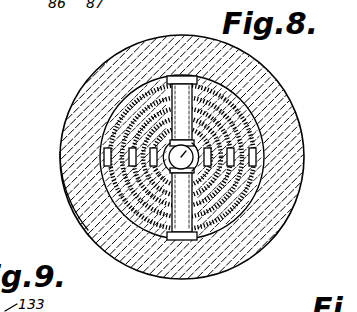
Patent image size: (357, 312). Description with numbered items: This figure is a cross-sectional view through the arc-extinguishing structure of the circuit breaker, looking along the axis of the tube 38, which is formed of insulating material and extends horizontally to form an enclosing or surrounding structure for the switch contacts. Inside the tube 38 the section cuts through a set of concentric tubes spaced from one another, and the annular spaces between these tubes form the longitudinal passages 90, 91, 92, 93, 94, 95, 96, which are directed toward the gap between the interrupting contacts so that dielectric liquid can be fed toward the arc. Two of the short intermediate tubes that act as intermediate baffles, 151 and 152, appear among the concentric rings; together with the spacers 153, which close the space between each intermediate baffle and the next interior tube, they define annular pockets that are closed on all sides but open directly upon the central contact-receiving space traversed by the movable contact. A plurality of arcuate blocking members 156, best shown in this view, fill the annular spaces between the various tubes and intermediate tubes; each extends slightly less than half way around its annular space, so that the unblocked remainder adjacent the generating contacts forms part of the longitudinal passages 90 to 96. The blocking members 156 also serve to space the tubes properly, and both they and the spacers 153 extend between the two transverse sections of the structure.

The tube 38 is at (255, 65).
The spacer 153 is at (246, 111).
The blocking member 156 is at (142, 108).
The longitudinal passage 96 is at (257, 155).
The longitudinal passage 95 is at (250, 172).
The longitudinal passage 94 is at (230, 192).
The intermediate baffle 152 is at (218, 190).
The intermediate baffle 151 is at (201, 195).
The longitudinal passage 93 is at (138, 222).
The longitudinal passage 92 is at (96, 232).
The longitudinal passage 91 is at (78, 207).
The longitudinal passage 90 is at (73, 185).